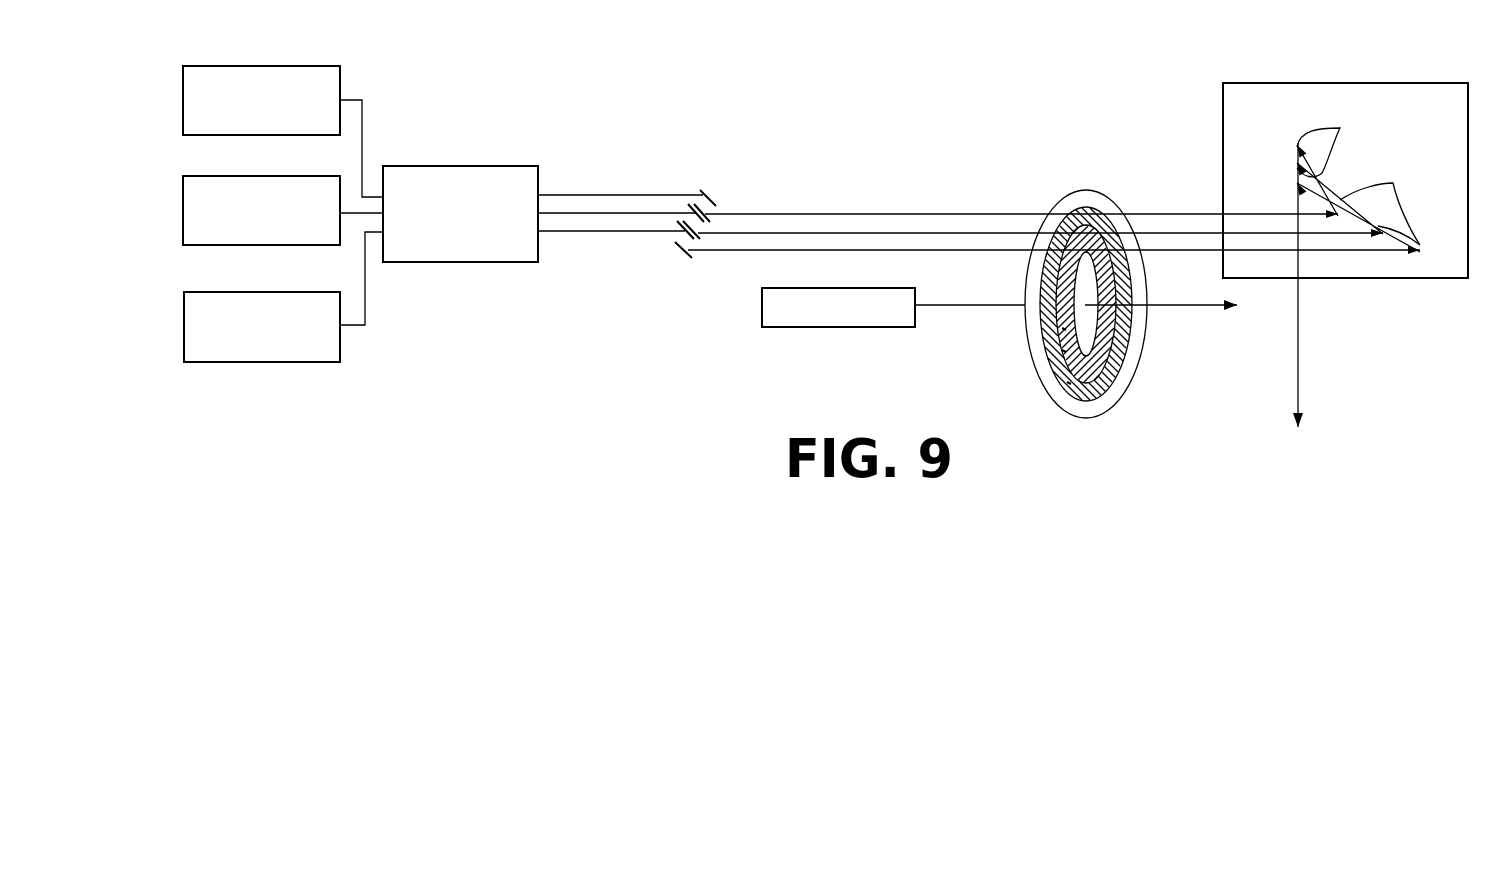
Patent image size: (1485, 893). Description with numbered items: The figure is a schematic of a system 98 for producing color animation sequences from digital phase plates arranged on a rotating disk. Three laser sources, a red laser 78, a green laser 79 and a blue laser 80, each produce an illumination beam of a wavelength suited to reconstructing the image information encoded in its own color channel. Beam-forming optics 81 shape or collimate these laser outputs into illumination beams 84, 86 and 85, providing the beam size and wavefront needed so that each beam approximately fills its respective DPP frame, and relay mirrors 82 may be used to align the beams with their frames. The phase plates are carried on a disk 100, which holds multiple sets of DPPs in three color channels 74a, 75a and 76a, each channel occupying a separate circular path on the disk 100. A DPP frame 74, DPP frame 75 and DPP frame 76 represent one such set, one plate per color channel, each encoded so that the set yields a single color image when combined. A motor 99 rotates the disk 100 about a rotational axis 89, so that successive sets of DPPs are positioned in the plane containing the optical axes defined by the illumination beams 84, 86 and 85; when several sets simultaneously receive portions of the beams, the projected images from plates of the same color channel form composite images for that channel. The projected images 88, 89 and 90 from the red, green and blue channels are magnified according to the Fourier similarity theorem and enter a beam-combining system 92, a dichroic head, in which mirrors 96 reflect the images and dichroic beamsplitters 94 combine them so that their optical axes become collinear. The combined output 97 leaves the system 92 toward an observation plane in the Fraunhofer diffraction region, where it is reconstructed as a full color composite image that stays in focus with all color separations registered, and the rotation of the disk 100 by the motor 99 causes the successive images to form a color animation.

The DPP frame 74 is at (1063, 218).
The DPP frame 75 is at (1102, 214).
The DPP frame 76 is at (1104, 250).
The color channel of DPPs 74a is at (1067, 382).
The color channel of DPPs 75a is at (1062, 350).
The color channel of DPPs 76a is at (1062, 328).
The laser source 78 is at (183, 100).
The laser source 79 is at (183, 213).
The laser source 80 is at (184, 325).
The beam-forming optics 81 is at (443, 166).
The relay mirrors 82 is at (701, 190).
The illumination beam 84 is at (740, 214).
The illumination beam 85 is at (700, 246).
The illumination beam 86 is at (740, 252).
The projected image 88 is at (1183, 213).
The projected image / rotational axis 89 is at (1165, 235).
The projected image 90 is at (1198, 252).
The beam-combining system 92 is at (1337, 83).
The dichroic beamsplitters 94 is at (1345, 127).
The mirrors 96 is at (1393, 183).
The output beam to observation plane 97 is at (1299, 360).
The system 98 is at (888, 98).
The motor 99 is at (795, 328).
The disk 100 is at (1083, 418).